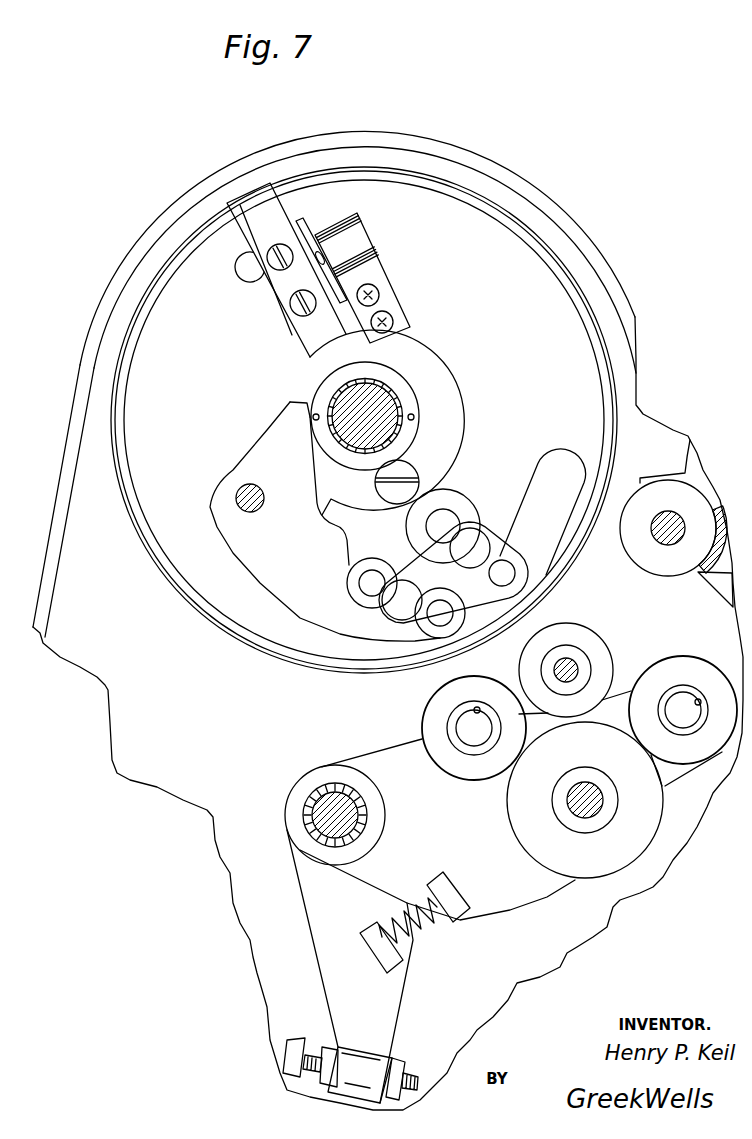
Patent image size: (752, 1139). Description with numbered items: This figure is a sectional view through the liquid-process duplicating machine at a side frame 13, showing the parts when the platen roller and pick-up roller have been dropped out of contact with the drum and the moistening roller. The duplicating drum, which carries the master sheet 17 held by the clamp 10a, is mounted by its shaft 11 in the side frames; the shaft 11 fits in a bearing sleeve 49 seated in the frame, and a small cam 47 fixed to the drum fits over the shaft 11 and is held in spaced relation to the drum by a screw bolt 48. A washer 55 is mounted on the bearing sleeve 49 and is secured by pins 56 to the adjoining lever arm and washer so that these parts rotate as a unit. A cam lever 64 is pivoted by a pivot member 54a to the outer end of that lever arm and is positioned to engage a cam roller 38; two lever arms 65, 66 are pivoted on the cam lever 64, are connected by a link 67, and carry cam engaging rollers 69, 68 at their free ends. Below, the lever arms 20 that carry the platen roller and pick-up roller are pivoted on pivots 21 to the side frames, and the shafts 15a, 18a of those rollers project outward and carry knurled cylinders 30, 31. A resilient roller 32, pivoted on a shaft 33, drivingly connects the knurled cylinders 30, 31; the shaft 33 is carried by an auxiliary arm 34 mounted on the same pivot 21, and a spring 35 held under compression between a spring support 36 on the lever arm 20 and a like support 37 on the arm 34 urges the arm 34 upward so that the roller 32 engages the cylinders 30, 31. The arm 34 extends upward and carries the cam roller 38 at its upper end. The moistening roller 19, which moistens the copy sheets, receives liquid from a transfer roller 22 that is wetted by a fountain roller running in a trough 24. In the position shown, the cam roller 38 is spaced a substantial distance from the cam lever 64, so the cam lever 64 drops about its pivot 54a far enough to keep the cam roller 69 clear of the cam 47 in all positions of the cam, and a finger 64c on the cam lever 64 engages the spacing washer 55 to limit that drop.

The side frame 13 is at (167, 233).
The master sheet 17 is at (161, 268).
The clamp 10a is at (267, 215).
The shaft 11 is at (343, 400).
The washer 55 is at (400, 385).
The cam 47 is at (448, 417).
The pins 56 is at (314, 421).
The finger 64c is at (298, 410).
The cam lever 64 is at (215, 495).
The pivot member 54a is at (250, 512).
The bearing sleeve 49 is at (357, 453).
The screw bolt 48 is at (390, 495).
The cam engaging roller 69 is at (463, 505).
The link 67 is at (428, 586).
The lever arm 65 is at (517, 558).
The cam engaging roller 68 is at (361, 557).
The lever arm 66 is at (418, 630).
The transfer roller 22 is at (692, 453).
The moistening roller 19 is at (656, 568).
The trough 24 is at (713, 575).
The cam roller 38 is at (573, 635).
The knurled cylinder 30 is at (463, 698).
The shaft 15a is at (462, 725).
The knurled cylinder 31 is at (671, 685).
The shaft 18a is at (690, 718).
The resilient roller 32 is at (569, 761).
The shaft 33 is at (570, 805).
The pivot 21 is at (322, 818).
The lever arm 20 is at (305, 875).
The auxiliary arm 34 is at (363, 868).
The spring 35 is at (427, 935).
The spring support 36 is at (373, 952).
The spring support 37 is at (457, 898).